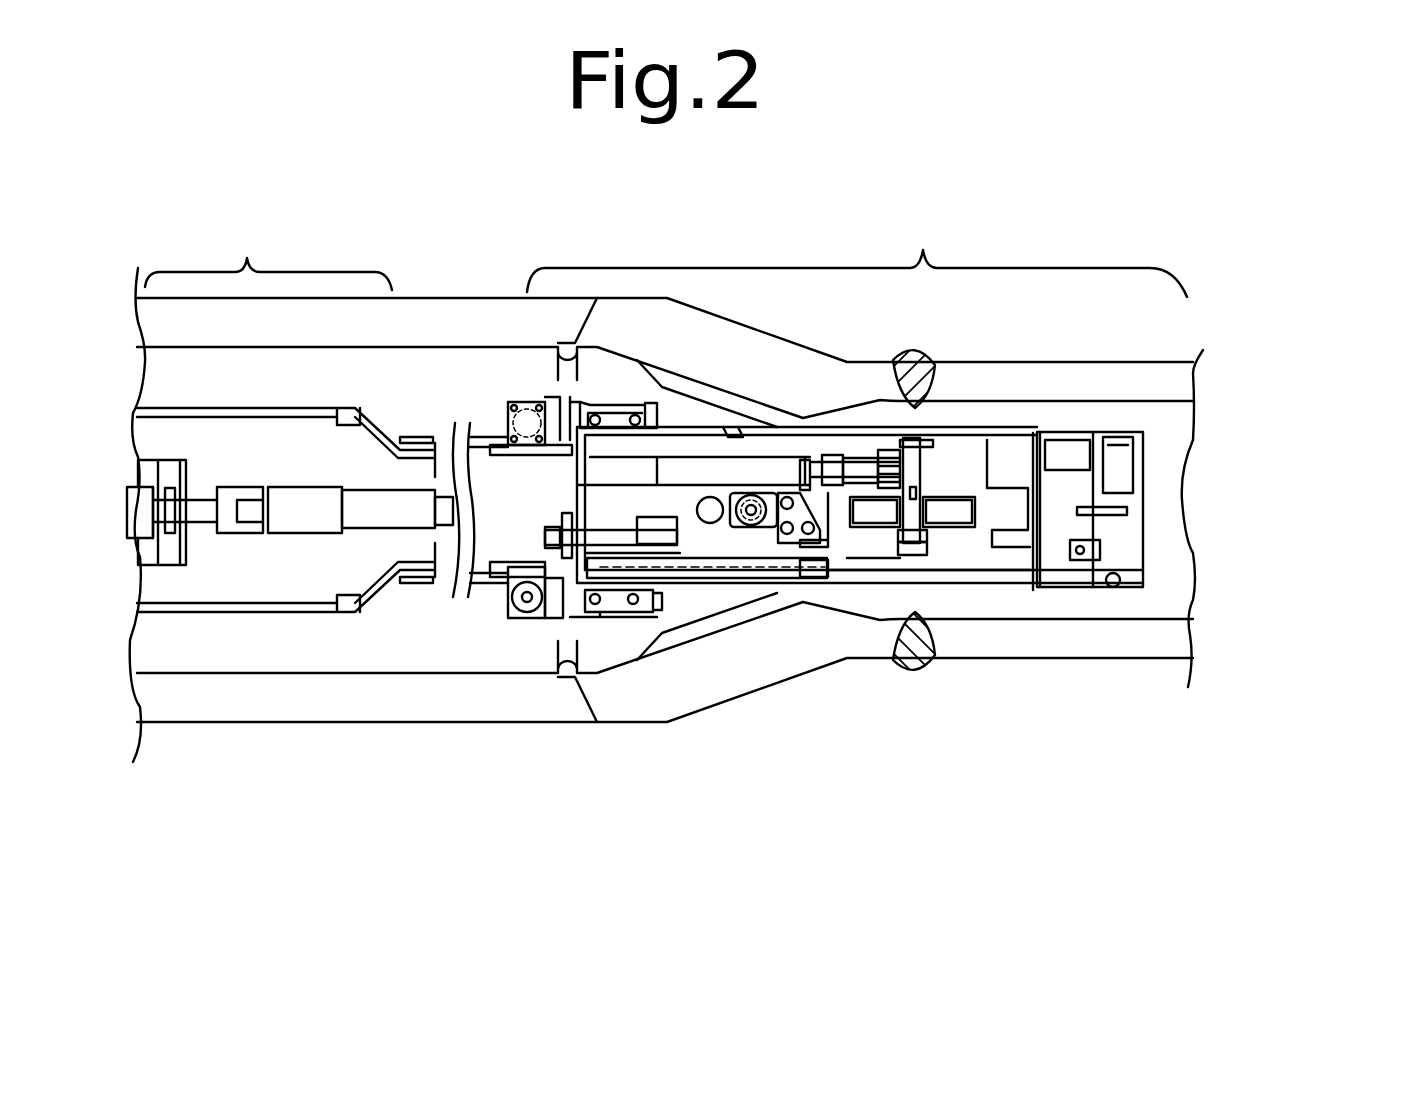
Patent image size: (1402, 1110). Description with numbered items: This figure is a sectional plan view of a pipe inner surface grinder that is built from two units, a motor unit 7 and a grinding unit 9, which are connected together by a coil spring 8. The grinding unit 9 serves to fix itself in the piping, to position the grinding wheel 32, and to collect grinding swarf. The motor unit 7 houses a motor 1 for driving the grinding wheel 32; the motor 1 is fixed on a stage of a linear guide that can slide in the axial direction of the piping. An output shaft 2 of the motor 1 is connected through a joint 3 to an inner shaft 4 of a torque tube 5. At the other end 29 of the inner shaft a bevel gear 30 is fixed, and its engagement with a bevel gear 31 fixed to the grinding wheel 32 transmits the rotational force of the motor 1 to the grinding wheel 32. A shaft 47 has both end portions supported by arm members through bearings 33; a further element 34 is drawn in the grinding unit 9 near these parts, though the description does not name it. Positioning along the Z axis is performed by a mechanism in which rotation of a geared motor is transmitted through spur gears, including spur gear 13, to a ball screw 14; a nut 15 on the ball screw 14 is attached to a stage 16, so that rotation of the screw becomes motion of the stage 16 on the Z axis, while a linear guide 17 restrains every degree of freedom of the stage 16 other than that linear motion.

The motor 1 is at (147, 550).
The output shaft 2 is at (204, 513).
The joint 3 is at (248, 535).
The inner shaft 4 is at (258, 512).
The torque tube 5 is at (433, 532).
The motor unit 7 is at (296, 248).
The coil spring 8 is at (484, 475).
The grinding unit 9 is at (857, 250).
The spur gear 13 is at (565, 518).
The ball screw 14 is at (605, 545).
The nut 15 is at (662, 548).
The stage 16 is at (718, 578).
The linear guide 17 is at (797, 582).
The other end of the inner shaft 29 is at (830, 445).
The bevel gear 30 is at (900, 441).
The bevel gear 31 is at (938, 446).
The grinding wheel 32 is at (963, 517).
The bearings 33 is at (918, 494).
The Feed motor 34 is at (1123, 467).
The shaft 47 is at (900, 522).